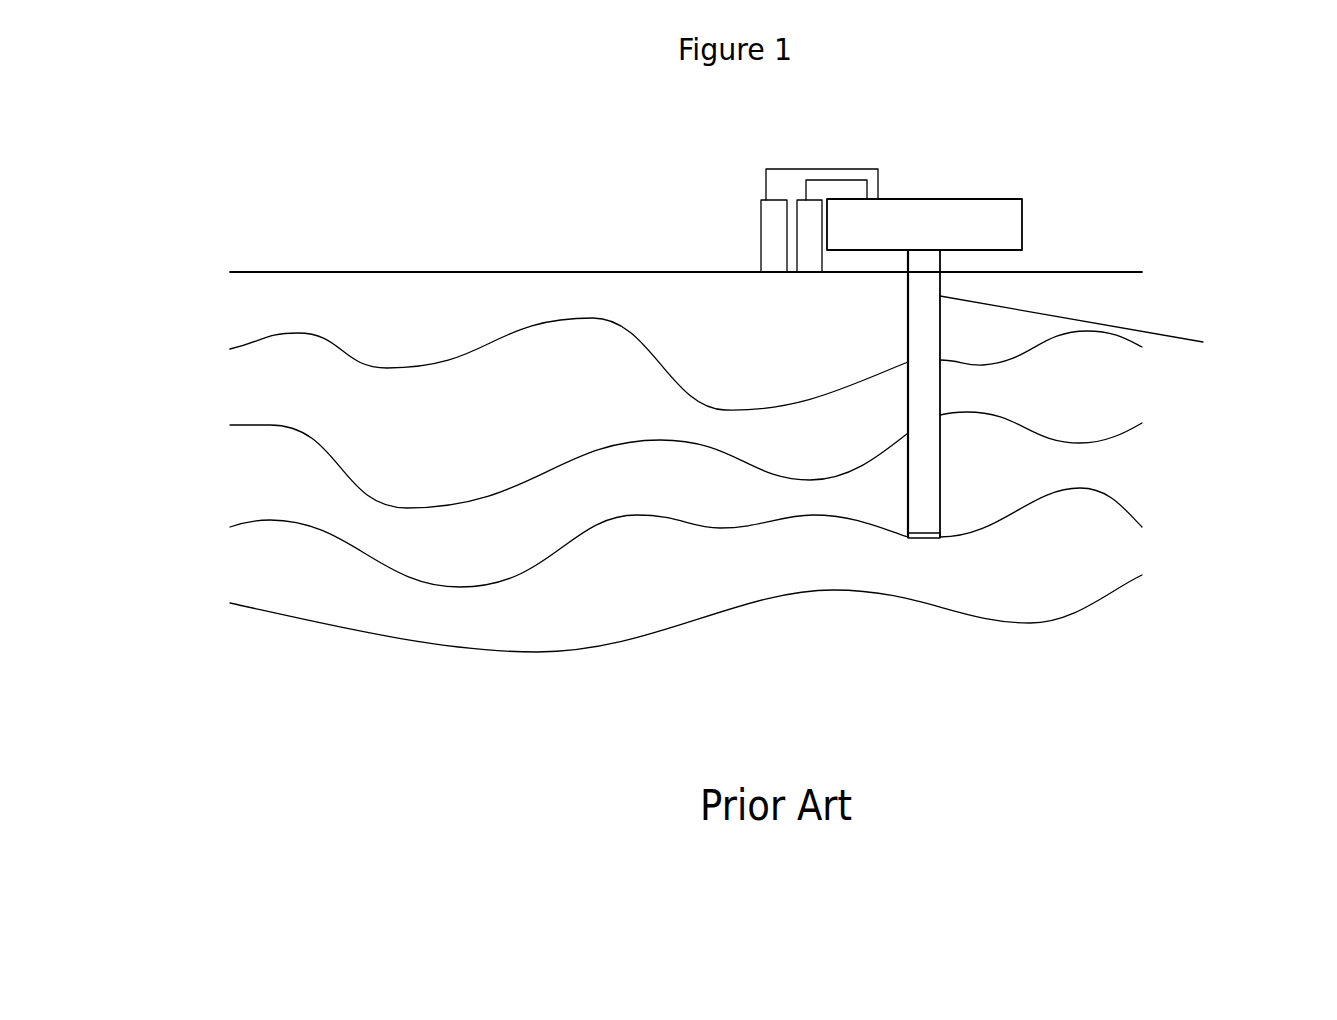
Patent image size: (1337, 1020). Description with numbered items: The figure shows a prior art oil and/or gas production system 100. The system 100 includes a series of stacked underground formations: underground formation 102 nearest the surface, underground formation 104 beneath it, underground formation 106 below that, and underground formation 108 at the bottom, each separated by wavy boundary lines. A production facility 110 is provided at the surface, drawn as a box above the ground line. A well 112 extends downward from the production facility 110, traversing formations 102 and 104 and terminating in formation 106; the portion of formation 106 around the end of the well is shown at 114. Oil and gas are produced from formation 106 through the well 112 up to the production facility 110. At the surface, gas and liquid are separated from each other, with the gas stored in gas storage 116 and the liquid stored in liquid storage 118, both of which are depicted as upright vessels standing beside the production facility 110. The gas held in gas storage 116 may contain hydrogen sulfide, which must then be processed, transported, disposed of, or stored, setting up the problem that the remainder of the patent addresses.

The prior art system 100 is at (598, 151).
The underground formation 102 is at (686, 360).
The underground formation 104 is at (686, 441).
The underground formation 106 is at (686, 514).
The underground formation 108 is at (686, 587).
The production facility 110 is at (944, 235).
The well 112 is at (1106, 325).
The portion of formation 114 is at (890, 505).
The gas storage 116 is at (807, 221).
The liquid storage 118 is at (777, 221).